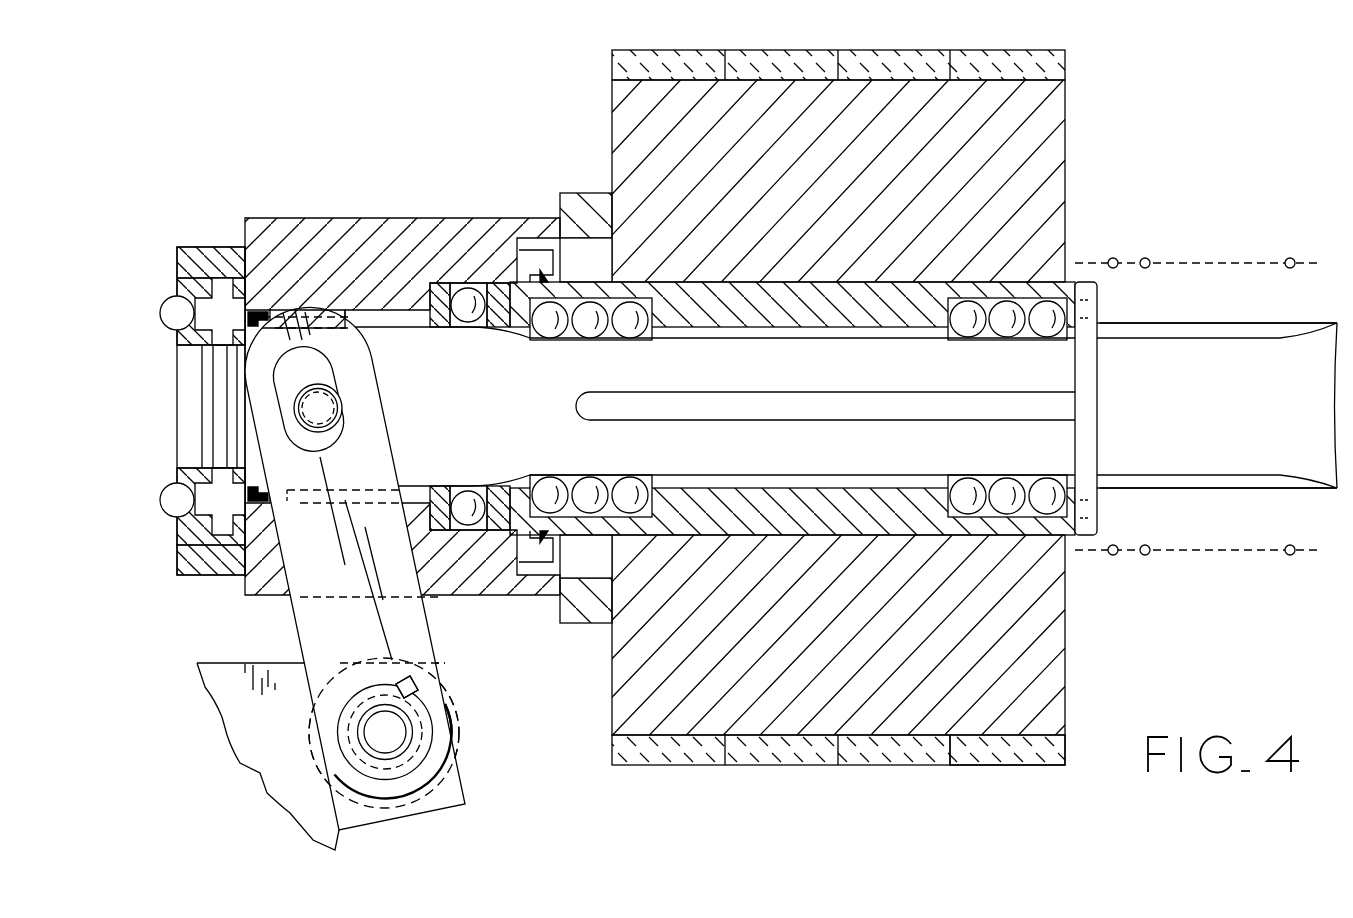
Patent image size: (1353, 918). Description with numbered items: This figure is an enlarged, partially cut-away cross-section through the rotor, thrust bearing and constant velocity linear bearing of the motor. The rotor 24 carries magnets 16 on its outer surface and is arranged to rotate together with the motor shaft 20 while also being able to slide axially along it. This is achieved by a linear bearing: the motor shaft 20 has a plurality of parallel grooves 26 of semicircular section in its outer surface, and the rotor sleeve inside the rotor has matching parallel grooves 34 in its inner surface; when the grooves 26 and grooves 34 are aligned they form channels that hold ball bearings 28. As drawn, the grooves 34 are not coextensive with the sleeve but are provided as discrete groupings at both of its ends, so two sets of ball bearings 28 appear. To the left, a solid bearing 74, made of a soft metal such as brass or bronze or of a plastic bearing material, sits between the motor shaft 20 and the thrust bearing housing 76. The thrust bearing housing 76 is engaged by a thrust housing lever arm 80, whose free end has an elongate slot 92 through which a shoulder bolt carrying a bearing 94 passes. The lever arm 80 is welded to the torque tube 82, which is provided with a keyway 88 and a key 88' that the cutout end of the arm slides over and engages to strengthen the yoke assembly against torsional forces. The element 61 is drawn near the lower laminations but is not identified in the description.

The magnets 16 is at (689, 52).
The end lamination plate 61 is at (1030, 765).
The rotor 24 is at (838, 183).
The thrust bearing housing 76 is at (385, 232).
The solid bearing 74 is at (400, 326).
The grooves 34 is at (652, 308).
The motor shaft 20 is at (418, 363).
The grooves 26 is at (1160, 327).
The ball bearings 28 is at (634, 334).
The torque tube 82 is at (335, 752).
The thrust housing lever arms 80 is at (336, 565).
The bearings 94 is at (348, 370).
The elongate slots 92 is at (346, 432).
The keyway 88 is at (460, 695).
The key 88' is at (454, 677).